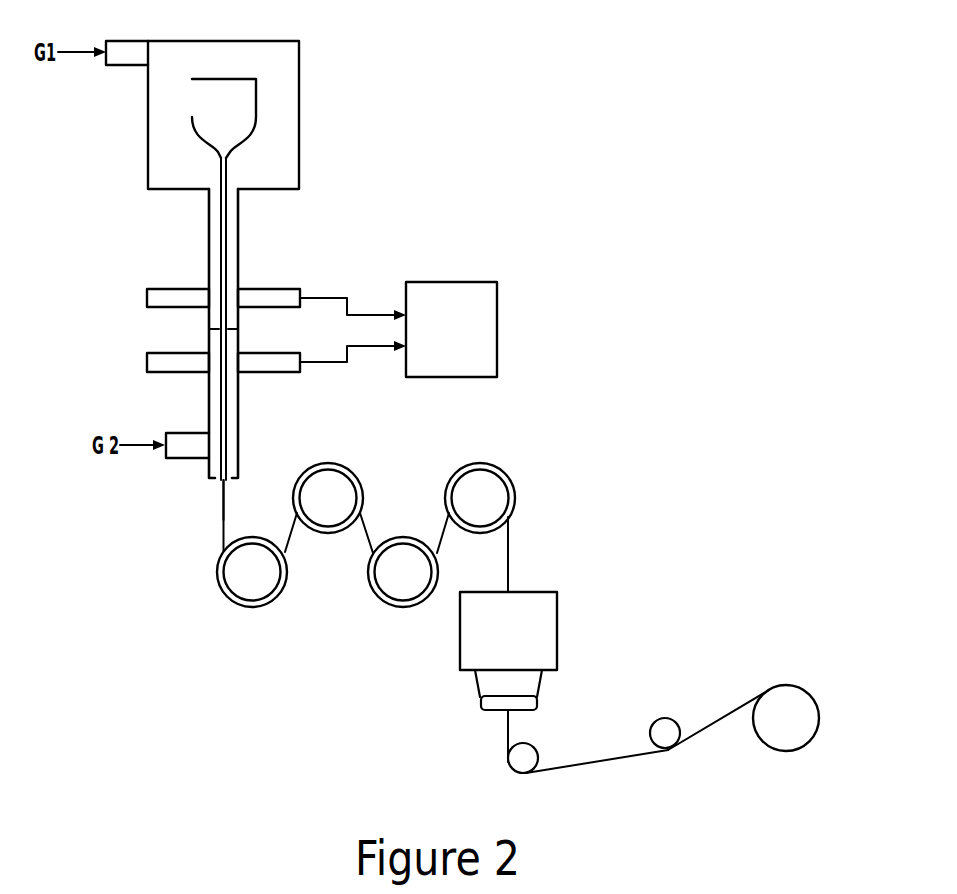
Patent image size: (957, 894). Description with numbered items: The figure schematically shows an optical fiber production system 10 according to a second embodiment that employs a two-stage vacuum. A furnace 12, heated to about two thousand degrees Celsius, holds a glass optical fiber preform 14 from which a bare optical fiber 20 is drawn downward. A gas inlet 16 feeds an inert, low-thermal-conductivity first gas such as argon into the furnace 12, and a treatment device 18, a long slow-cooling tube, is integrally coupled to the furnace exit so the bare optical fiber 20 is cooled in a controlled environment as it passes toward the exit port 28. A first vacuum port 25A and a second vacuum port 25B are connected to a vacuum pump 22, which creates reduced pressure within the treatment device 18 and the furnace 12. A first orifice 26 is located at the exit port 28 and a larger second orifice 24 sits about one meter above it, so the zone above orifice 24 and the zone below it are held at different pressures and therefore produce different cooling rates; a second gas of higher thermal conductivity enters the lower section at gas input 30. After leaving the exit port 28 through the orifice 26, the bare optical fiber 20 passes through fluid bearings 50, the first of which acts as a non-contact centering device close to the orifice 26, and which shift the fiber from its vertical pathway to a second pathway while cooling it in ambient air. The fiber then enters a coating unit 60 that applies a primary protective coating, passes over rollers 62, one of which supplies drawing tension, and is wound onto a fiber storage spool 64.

The optical fiber production system 10 is at (375, 73).
The furnace 12 is at (283, 41).
The glass optical fiber preform 14 is at (256, 95).
The gas inlet 16 is at (104, 43).
The treatment device 18 is at (208, 205).
The bare optical fiber 20 is at (220, 256).
The vacuum pump 22 is at (482, 282).
The second orifice 24 is at (218, 330).
The first vacuum port 25A is at (276, 289).
The second vacuum port 25B is at (276, 353).
The first orifice 26 is at (220, 482).
The exit port 28 is at (198, 479).
The gas input 30 is at (163, 435).
The fluid bearings 50 is at (447, 484).
The coating unit 60 is at (547, 592).
The rollers 62 is at (652, 722).
The fiber storage spool 64 is at (818, 705).